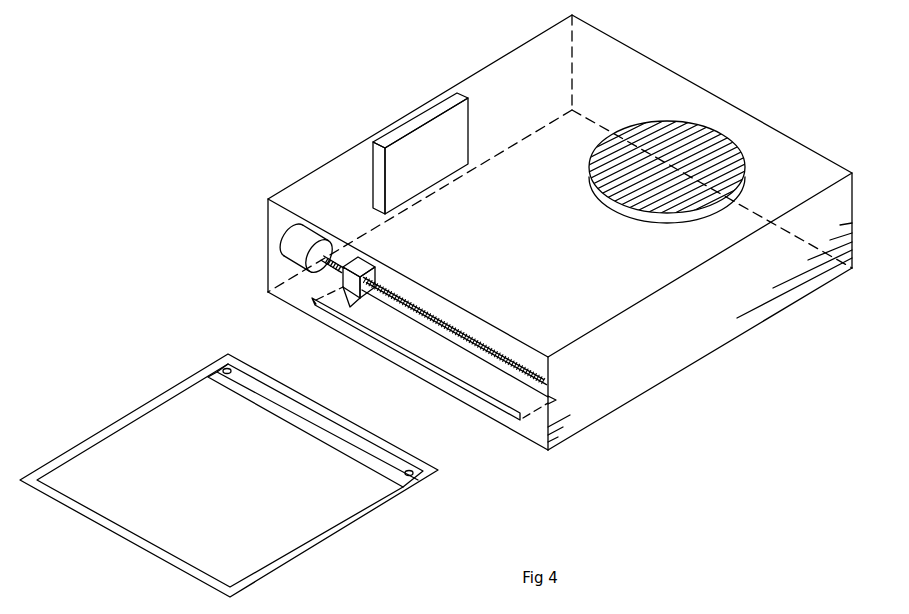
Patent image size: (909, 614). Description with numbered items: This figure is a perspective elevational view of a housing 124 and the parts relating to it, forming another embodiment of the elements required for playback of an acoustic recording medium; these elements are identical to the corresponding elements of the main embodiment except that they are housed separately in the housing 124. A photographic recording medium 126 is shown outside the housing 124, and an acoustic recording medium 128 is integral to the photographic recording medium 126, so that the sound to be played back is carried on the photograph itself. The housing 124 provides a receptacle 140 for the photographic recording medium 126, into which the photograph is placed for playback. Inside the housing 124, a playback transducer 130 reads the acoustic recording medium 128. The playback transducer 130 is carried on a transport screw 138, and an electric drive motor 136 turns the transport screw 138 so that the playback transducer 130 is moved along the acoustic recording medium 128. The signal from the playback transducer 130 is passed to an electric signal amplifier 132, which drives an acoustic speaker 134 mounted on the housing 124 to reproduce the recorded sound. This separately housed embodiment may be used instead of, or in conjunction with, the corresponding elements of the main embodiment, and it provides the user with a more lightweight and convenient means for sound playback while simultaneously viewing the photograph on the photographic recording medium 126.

The housing 124 is at (745, 97).
The photographic recording medium 126 is at (357, 520).
The acoustic recording medium 128 is at (250, 388).
The playback transducer 130 is at (343, 277).
The electric signal amplifier 132 is at (461, 128).
The acoustic speaker 134 is at (627, 123).
The electric drive motor 136 is at (290, 238).
The transport screw 138 is at (548, 365).
The receptacle 140 is at (455, 382).